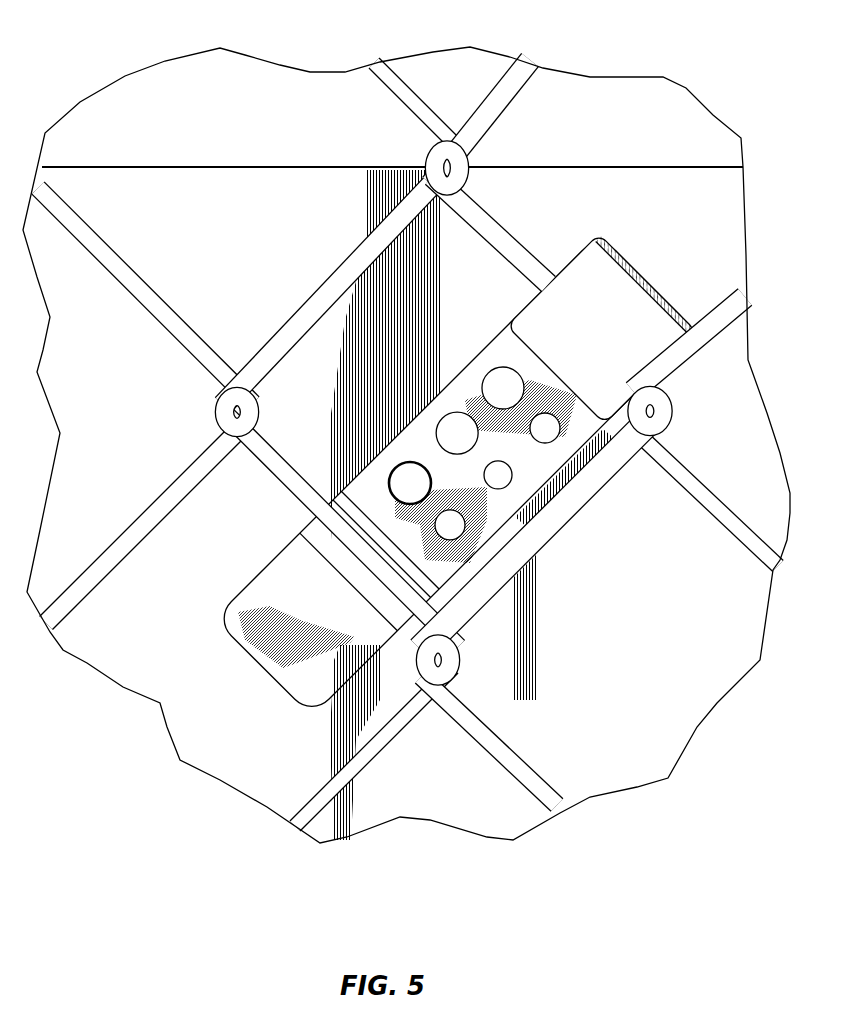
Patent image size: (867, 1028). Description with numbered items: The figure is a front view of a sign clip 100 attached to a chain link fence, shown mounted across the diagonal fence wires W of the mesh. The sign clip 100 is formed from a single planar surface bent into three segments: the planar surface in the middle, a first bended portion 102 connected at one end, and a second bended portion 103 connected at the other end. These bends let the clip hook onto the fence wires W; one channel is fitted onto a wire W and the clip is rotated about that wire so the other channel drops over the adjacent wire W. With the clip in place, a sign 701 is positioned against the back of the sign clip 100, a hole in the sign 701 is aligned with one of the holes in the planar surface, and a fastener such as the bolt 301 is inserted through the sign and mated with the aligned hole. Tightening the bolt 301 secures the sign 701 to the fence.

The sign 701 is at (519, 188).
The fence wire W is at (518, 260).
The sign clip 100 is at (461, 454).
The first bended portion 102 is at (596, 295).
The second bended portion 103 is at (377, 578).
The bolt 301 is at (405, 483).